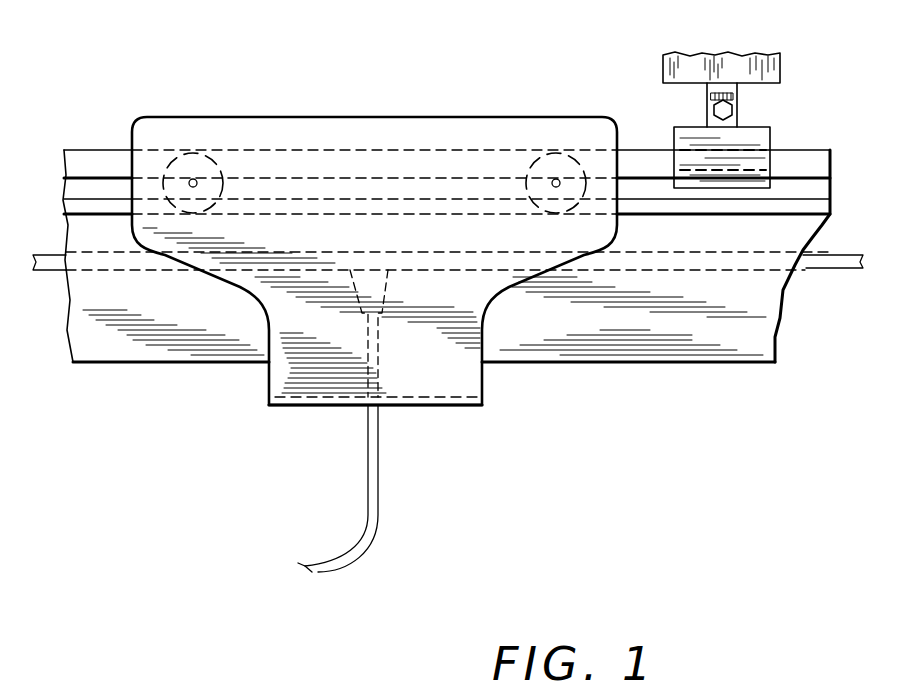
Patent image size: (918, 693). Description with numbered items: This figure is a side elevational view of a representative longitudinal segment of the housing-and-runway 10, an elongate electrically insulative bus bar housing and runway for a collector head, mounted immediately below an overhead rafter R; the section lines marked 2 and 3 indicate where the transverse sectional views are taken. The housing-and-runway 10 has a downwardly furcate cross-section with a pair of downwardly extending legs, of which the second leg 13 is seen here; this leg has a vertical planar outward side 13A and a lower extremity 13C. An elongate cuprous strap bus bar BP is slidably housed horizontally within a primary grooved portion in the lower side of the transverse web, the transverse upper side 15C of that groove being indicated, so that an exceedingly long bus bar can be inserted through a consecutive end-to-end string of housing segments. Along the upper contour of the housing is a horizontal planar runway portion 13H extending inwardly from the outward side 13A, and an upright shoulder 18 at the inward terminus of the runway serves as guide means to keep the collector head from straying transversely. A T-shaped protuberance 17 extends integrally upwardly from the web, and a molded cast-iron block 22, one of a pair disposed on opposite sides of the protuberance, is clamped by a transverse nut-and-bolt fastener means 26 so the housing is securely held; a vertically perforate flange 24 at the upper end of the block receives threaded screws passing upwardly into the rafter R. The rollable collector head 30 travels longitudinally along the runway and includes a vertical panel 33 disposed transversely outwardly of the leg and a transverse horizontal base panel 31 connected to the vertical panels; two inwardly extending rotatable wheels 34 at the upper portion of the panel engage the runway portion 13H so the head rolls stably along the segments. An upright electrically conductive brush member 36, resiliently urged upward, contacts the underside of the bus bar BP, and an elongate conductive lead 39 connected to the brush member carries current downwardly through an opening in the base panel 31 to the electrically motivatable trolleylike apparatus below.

The housing-and-runway 10 is at (668, 364).
The second leg 13 is at (590, 362).
The vertical planar outward side of second leg 13A is at (188, 304).
The second leg lower extremity 13C is at (498, 364).
The horizontal planar runway portion 13H is at (80, 216).
The transverse upper side of primary grooved portion 15C is at (805, 255).
The T-shaped protuberance 17 is at (63, 176).
The upright shoulder 18 is at (64, 208).
The molded cast-iron block 22 is at (760, 140).
The vertically perforate flange 24 is at (735, 101).
The transverse nut-and-bolt fastener means 26 is at (732, 111).
The collector head 30 is at (486, 398).
The transverse horizontal base panel 31 is at (437, 405).
The vertical panel 33 is at (415, 362).
The rotatable wheel 34 is at (200, 213).
The brush member 36 is at (387, 280).
The electrically conductive wire or lead 39 is at (380, 462).
The bus bar BP is at (65, 273).
The rafter R is at (780, 70).
The section line 2- 2 is at (338, 28).
The section line 3- 3 is at (566, 105).